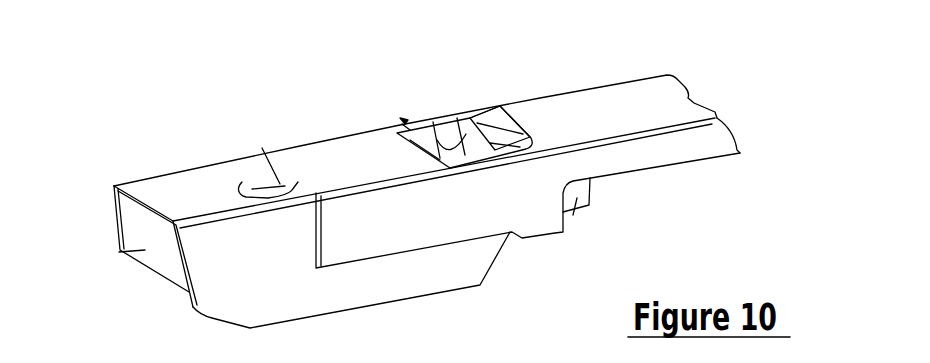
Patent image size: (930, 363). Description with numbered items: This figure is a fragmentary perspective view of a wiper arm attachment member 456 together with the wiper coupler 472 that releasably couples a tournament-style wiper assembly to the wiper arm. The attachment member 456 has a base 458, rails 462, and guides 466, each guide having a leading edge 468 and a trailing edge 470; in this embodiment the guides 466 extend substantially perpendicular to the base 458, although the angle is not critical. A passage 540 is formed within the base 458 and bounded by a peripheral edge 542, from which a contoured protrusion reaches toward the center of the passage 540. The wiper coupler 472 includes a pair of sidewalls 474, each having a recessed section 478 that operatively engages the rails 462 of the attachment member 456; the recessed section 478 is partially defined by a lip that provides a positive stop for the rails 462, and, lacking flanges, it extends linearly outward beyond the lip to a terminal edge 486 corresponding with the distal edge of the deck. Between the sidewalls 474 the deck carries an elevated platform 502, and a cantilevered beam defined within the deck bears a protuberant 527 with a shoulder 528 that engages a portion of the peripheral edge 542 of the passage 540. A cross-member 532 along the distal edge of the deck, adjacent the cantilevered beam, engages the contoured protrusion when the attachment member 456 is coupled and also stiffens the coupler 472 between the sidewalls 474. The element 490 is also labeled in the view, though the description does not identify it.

The wiper arm attachment member 456 is at (722, 93).
The base 458 is at (615, 102).
The rails 462 is at (393, 225).
The guides 466 is at (547, 227).
The leading edge 468 is at (510, 235).
The trailing edge 470 is at (573, 214).
The wiper coupler 472 is at (122, 165).
The sidewalls 474 is at (114, 212).
The recessed section 478 is at (574, 213).
The terminal edge 486 is at (591, 192).
The bottom edge 490 is at (121, 250).
The elevated platform 502 is at (197, 192).
The protuberant 527 is at (457, 119).
The shoulder 528 is at (436, 119).
The cross-member 532 is at (494, 114).
The passage 540 is at (404, 121).
The peripheral edge 542 is at (396, 132).